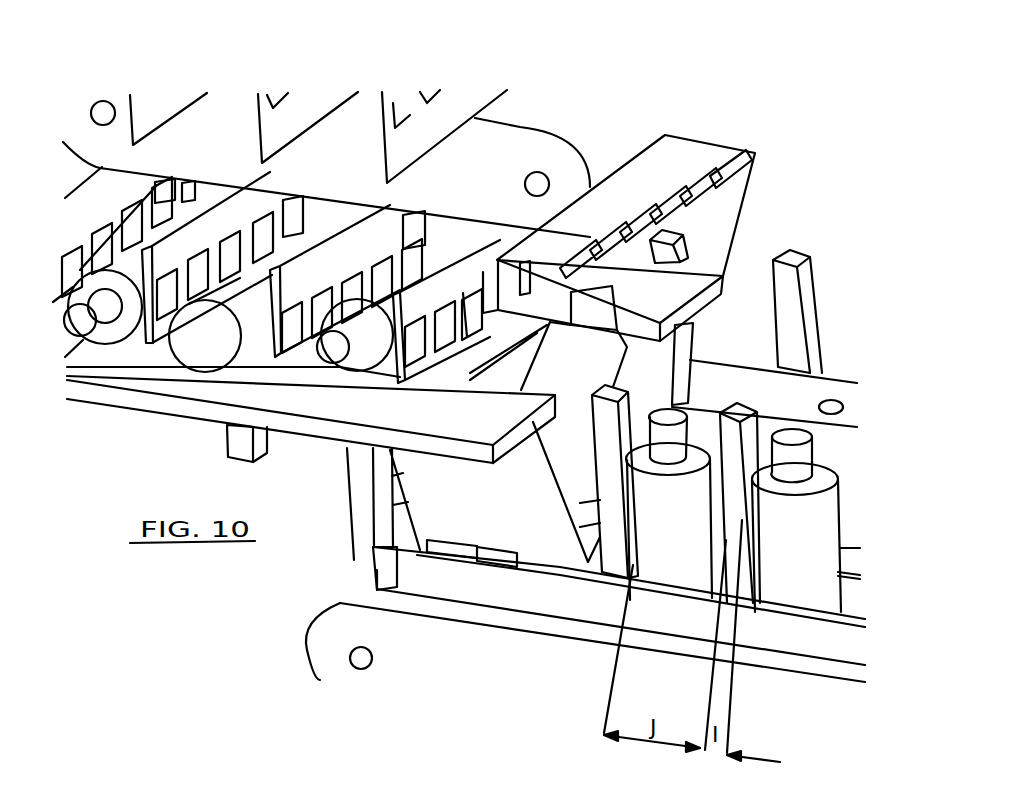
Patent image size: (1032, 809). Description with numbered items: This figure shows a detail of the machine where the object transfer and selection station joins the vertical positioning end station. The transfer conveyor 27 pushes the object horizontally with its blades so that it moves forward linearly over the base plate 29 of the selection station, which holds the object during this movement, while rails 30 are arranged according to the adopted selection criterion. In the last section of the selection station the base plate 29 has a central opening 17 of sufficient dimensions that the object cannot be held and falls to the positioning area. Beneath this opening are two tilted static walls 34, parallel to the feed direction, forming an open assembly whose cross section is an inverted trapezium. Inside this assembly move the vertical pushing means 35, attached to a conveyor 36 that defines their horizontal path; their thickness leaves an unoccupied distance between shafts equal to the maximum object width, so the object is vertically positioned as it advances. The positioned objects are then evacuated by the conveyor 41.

The central opening 17 is at (557, 367).
The conveyor 27 is at (345, 162).
The base plate 29 is at (480, 345).
The rails 30 is at (680, 287).
The tilted static walls 34 is at (645, 373).
The vertical pushing means 35 is at (737, 412).
The conveyor 36 is at (802, 407).
The conveyor 41 is at (538, 667).